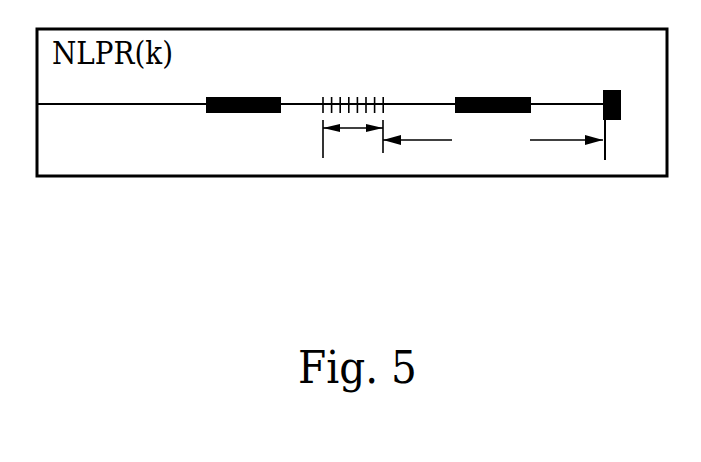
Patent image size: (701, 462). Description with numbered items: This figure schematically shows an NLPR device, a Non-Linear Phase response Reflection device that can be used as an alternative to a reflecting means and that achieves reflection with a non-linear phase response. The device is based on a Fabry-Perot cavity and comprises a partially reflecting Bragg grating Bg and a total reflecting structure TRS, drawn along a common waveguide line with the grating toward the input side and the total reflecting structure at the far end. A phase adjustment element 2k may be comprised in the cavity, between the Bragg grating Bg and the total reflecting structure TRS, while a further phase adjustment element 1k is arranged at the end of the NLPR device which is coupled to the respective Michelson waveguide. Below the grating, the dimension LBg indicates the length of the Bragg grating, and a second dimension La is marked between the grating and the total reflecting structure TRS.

The phase adjustment element 1k is at (243, 82).
The phase adjustment element 2k is at (493, 82).
The partially reflecting Bragg grating Bg is at (353, 85).
The total reflecting structure TRS is at (619, 101).
The length of the Bragg grating LBg is at (353, 146).
The length between grating and TRS La is at (493, 136).